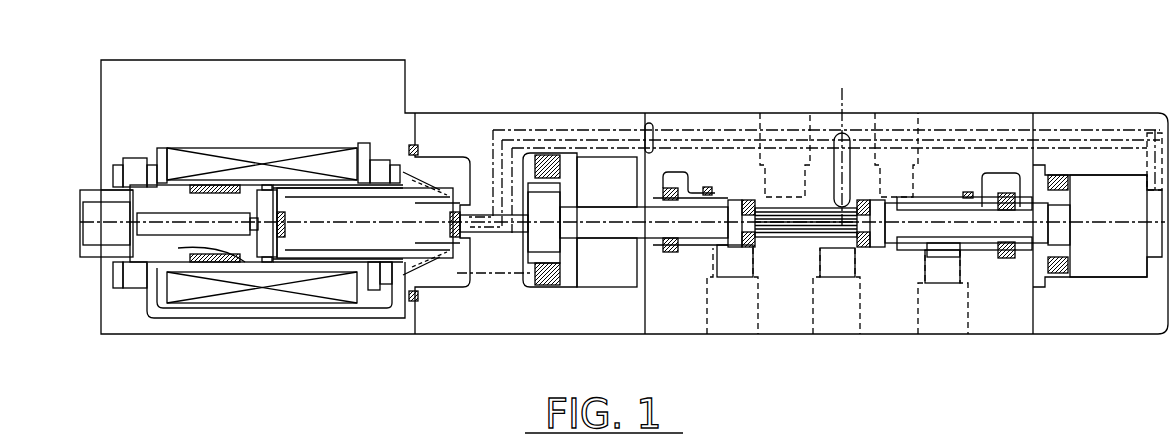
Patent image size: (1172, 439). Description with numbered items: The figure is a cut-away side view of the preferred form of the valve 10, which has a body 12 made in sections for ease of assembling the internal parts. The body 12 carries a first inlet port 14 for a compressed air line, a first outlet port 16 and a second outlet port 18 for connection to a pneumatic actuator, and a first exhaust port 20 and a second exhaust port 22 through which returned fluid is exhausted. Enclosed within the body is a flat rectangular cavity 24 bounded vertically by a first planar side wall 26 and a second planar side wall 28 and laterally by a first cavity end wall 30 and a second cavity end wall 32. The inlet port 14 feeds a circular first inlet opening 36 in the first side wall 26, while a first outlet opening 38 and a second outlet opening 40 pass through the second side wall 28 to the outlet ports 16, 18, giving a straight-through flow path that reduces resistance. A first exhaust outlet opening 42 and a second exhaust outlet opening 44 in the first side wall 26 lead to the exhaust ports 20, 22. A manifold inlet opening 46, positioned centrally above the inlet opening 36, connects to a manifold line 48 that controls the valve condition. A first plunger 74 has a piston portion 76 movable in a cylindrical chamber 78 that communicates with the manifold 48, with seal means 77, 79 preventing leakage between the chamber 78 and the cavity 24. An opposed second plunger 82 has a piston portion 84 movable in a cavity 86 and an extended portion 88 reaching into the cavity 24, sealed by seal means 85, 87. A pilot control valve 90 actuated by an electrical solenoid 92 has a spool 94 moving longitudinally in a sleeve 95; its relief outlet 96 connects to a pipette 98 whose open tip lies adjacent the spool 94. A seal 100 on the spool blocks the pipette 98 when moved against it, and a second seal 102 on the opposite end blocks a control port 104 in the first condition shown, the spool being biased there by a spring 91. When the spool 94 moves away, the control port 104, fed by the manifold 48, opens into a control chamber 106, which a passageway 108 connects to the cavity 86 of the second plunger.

The valve 10 is at (489, 56).
The body 12 is at (983, 113).
The first inlet port 14 is at (810, 334).
The first outlet port 16 is at (822, 132).
The second outlet port 18 is at (918, 122).
The first exhaust port 20 is at (720, 334).
The second exhaust port 22 is at (968, 306).
The flat rectangular cavity 24 is at (942, 202).
The first planar side wall 26 is at (915, 250).
The second planar side wall 28 is at (920, 197).
The first cavity end wall 30 is at (718, 241).
The second cavity end wall 32 is at (960, 244).
The first inlet opening 36 is at (843, 250).
The first outlet opening 38 is at (772, 205).
The second outlet opening 40 is at (897, 198).
The first exhaust outlet opening 42 is at (715, 277).
The second exhaust outlet opening 44 is at (945, 248).
The manifold inlet opening 46 is at (833, 207).
The manifold line 48 is at (848, 144).
The first plunger 74 is at (1015, 258).
The piston portion 76 is at (1070, 223).
The seal means 77 is at (1060, 178).
The cylindrical chamber 78 is at (1092, 278).
The seal means 79 is at (1007, 207).
The second plunger 82 is at (589, 243).
The piston portion 84 is at (567, 287).
The seal means 85 is at (538, 285).
The cavity 86 is at (610, 288).
The seal means 87 is at (663, 178).
The extended portion 88 is at (683, 254).
The pilot control valve 90 is at (373, 174).
The spring 91 is at (433, 185).
The electrical solenoid 92 is at (250, 146).
The spool 94 is at (350, 207).
The sleeve 95 is at (197, 248).
The relief outlet 96 is at (110, 215).
The pipette 98 is at (184, 212).
The seal 100 is at (285, 230).
The second seal 102 is at (450, 230).
The control port 104 is at (467, 229).
The control chamber 106 is at (447, 283).
The passageway 108 is at (495, 283).